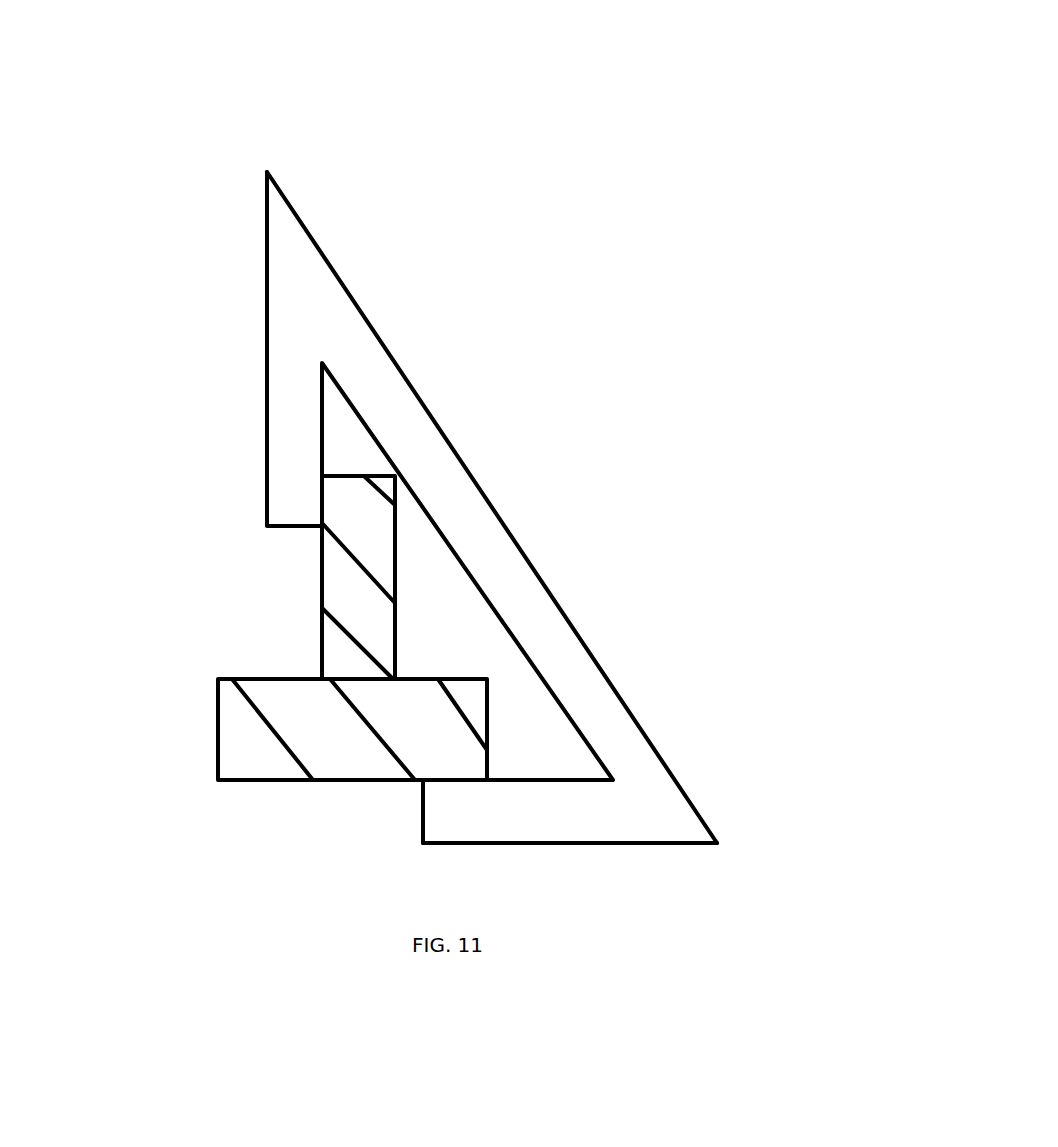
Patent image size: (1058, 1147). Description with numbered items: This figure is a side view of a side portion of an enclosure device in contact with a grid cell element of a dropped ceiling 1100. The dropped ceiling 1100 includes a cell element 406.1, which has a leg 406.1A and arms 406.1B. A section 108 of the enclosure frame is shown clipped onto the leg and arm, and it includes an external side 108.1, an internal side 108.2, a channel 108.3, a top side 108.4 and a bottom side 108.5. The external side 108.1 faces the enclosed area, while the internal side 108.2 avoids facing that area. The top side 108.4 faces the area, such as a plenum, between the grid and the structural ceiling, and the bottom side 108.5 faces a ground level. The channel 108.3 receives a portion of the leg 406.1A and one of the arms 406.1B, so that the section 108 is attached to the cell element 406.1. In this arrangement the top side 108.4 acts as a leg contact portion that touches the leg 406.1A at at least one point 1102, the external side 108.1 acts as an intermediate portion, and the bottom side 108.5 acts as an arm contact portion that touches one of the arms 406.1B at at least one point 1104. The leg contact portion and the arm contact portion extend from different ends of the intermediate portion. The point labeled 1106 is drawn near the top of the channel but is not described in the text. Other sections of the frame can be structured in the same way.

The dropped ceiling 1100 is at (568, 81).
The section 108 is at (637, 459).
The external side 108.1 is at (385, 340).
The internal side 108.2 is at (423, 819).
The channel 108.3 is at (460, 650).
The top side 108.4 is at (265, 277).
The bottom side 108.5 is at (610, 843).
The point 1102 is at (322, 490).
The point 1104 is at (467, 783).
The upper end of channel 1106 is at (398, 475).
The cell element 406.1 is at (190, 598).
The leg 406.1A is at (321, 567).
The arms 406.1B is at (218, 747).